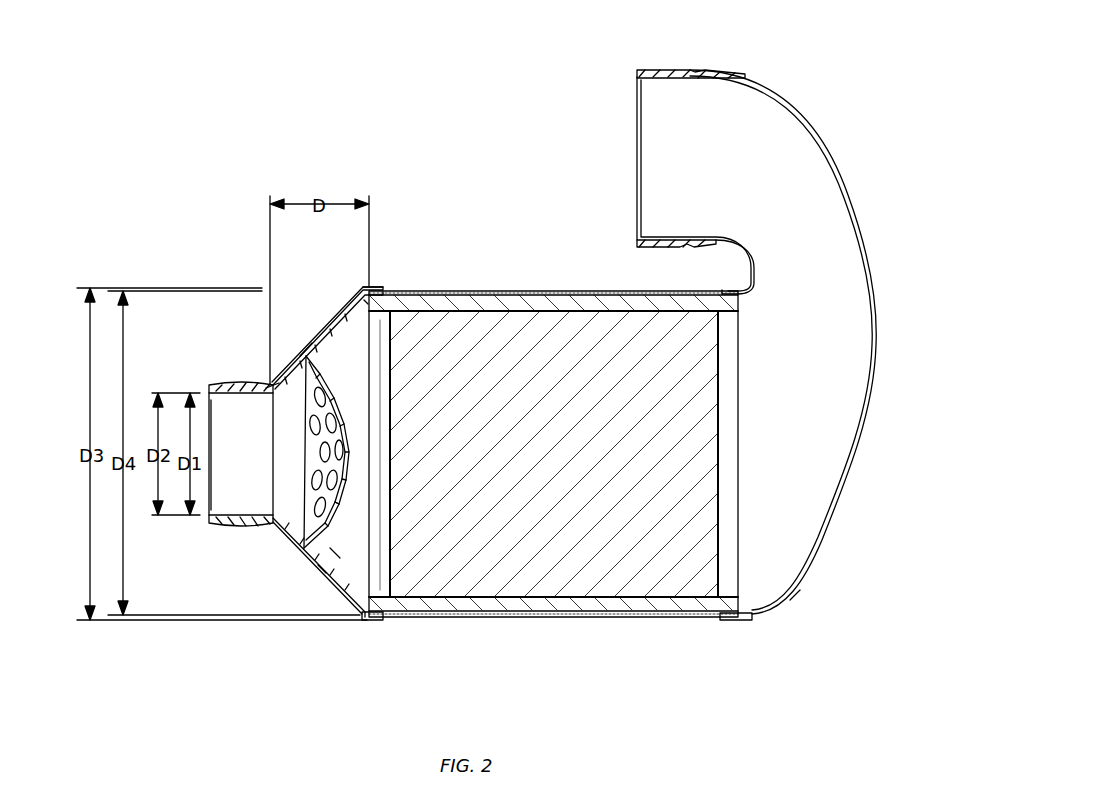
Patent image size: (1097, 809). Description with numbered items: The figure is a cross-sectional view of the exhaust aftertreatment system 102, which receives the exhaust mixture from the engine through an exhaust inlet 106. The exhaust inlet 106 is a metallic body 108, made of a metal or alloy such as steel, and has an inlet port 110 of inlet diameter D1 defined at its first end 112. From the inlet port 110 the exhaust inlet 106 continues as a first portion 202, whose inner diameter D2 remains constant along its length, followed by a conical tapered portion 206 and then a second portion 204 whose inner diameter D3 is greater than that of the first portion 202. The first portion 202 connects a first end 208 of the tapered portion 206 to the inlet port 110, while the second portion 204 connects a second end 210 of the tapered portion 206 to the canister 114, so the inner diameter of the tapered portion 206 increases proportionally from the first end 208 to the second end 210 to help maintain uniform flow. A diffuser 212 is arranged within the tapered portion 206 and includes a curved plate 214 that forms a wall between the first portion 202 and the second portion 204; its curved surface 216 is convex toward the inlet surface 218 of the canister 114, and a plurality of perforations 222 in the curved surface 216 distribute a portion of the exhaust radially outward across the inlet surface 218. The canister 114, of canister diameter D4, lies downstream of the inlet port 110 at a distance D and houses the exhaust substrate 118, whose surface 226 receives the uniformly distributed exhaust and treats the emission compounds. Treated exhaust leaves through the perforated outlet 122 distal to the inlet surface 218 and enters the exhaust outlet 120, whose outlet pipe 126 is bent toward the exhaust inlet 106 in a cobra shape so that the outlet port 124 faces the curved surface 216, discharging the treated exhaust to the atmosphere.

The exhaust aftertreatment system 102 is at (270, 66).
The exhaust inlet 106 is at (296, 365).
The metallic body 108 is at (296, 541).
The inlet port 110 is at (208, 506).
The first end 112 is at (208, 400).
The canister 114 is at (566, 608).
The exhaust substrate 118 is at (560, 456).
The exhaust outlet 120 is at (800, 592).
The outlet 122 is at (738, 547).
The outlet port 124 is at (636, 152).
The outlet pipe 126 is at (879, 346).
The first portion 202 is at (234, 526).
The second portion 204 is at (349, 540).
The tapered portion 206 is at (320, 570).
The first end 208 is at (260, 372).
The second end 210 is at (388, 287).
The diffuser 212 is at (336, 549).
The curved plate 214 is at (347, 516).
The curved surface 216 is at (342, 508).
The inlet surface 218 is at (366, 305).
The perforations 222 is at (308, 362).
The surface 226 is at (386, 573).